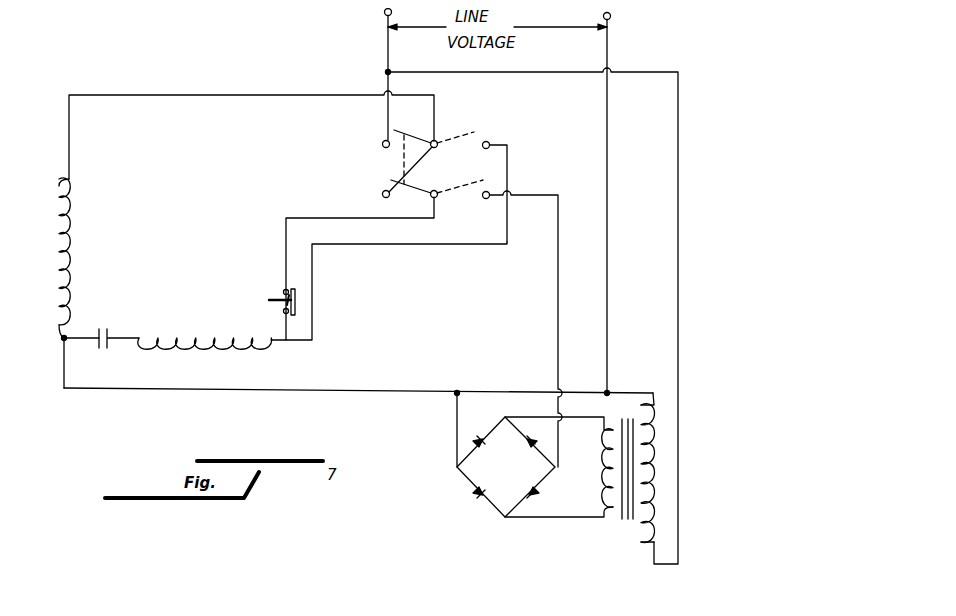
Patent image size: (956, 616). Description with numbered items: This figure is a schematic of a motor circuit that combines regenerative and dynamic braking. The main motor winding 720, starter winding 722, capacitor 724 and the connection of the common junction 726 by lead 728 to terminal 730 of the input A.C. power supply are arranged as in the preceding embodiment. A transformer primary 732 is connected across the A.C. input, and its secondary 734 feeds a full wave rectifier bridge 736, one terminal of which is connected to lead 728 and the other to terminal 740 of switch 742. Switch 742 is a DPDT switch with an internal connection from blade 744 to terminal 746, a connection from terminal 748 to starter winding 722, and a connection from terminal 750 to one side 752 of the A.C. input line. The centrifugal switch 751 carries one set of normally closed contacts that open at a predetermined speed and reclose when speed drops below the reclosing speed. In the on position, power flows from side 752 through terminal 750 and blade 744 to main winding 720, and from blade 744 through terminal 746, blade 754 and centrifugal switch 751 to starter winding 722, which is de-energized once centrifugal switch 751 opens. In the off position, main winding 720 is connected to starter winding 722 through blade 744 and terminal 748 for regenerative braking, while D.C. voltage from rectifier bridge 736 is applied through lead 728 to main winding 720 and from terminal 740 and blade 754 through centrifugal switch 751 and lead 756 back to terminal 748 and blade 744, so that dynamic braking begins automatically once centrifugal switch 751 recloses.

The main motor winding 720 is at (56, 226).
The starter winding 722 is at (180, 330).
The capacitor 724 is at (106, 326).
The common junction 726 is at (59, 339).
The lead 728 is at (300, 390).
The terminal of input A.C. power supply 730 is at (607, 44).
The transformer primary 732 is at (642, 520).
The transformer secondary 734 is at (598, 470).
The full wave rectifier bridge 736 is at (464, 478).
The terminal of switch 740 is at (486, 197).
The switch 742 is at (372, 152).
The blade 744 is at (420, 131).
The terminal 746 is at (380, 191).
The terminal 748 is at (489, 141).
The terminal 750 is at (381, 141).
The centrifugal switch 751 is at (283, 291).
The side of A.C. input line 752 is at (386, 45).
The blade 754 is at (400, 190).
The lead 756 is at (352, 247).